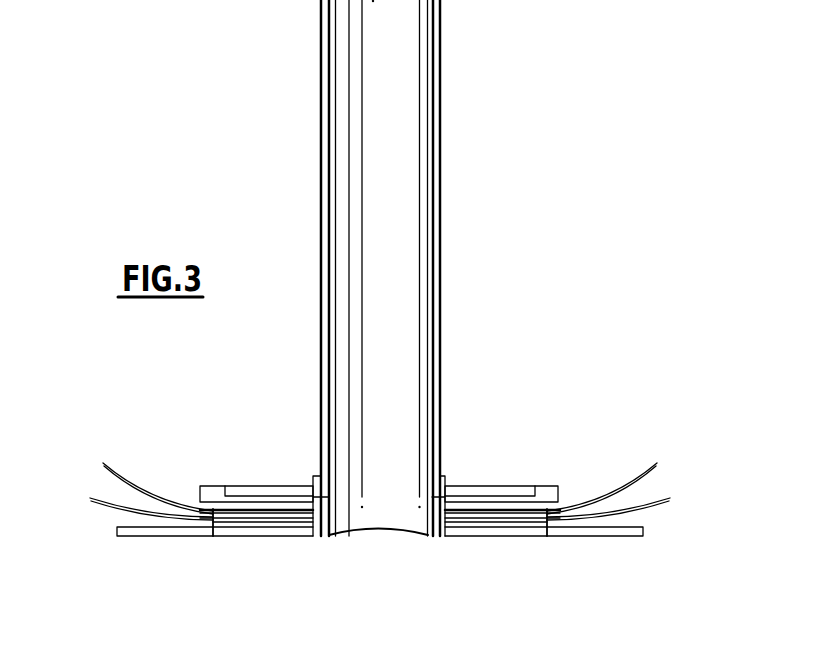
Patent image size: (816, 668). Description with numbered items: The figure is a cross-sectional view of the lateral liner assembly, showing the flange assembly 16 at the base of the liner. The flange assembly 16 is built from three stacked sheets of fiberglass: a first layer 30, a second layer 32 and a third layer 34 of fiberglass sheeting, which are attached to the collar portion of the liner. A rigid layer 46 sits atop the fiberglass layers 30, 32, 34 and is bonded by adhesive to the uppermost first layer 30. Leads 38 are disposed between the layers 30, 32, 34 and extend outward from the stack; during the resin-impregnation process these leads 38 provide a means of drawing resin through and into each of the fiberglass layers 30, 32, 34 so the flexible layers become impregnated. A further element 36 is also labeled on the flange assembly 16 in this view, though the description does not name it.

The flange assembly 16 is at (250, 566).
The first layer of fiberglass sheeting 30 is at (562, 509).
The second layer of fiberglass sheeting 32 is at (579, 518).
The third layer of fiberglass sheeting 34 is at (552, 525).
The retainer 36 is at (548, 490).
The leads 38 is at (100, 498).
The rigid layer 46 is at (492, 507).